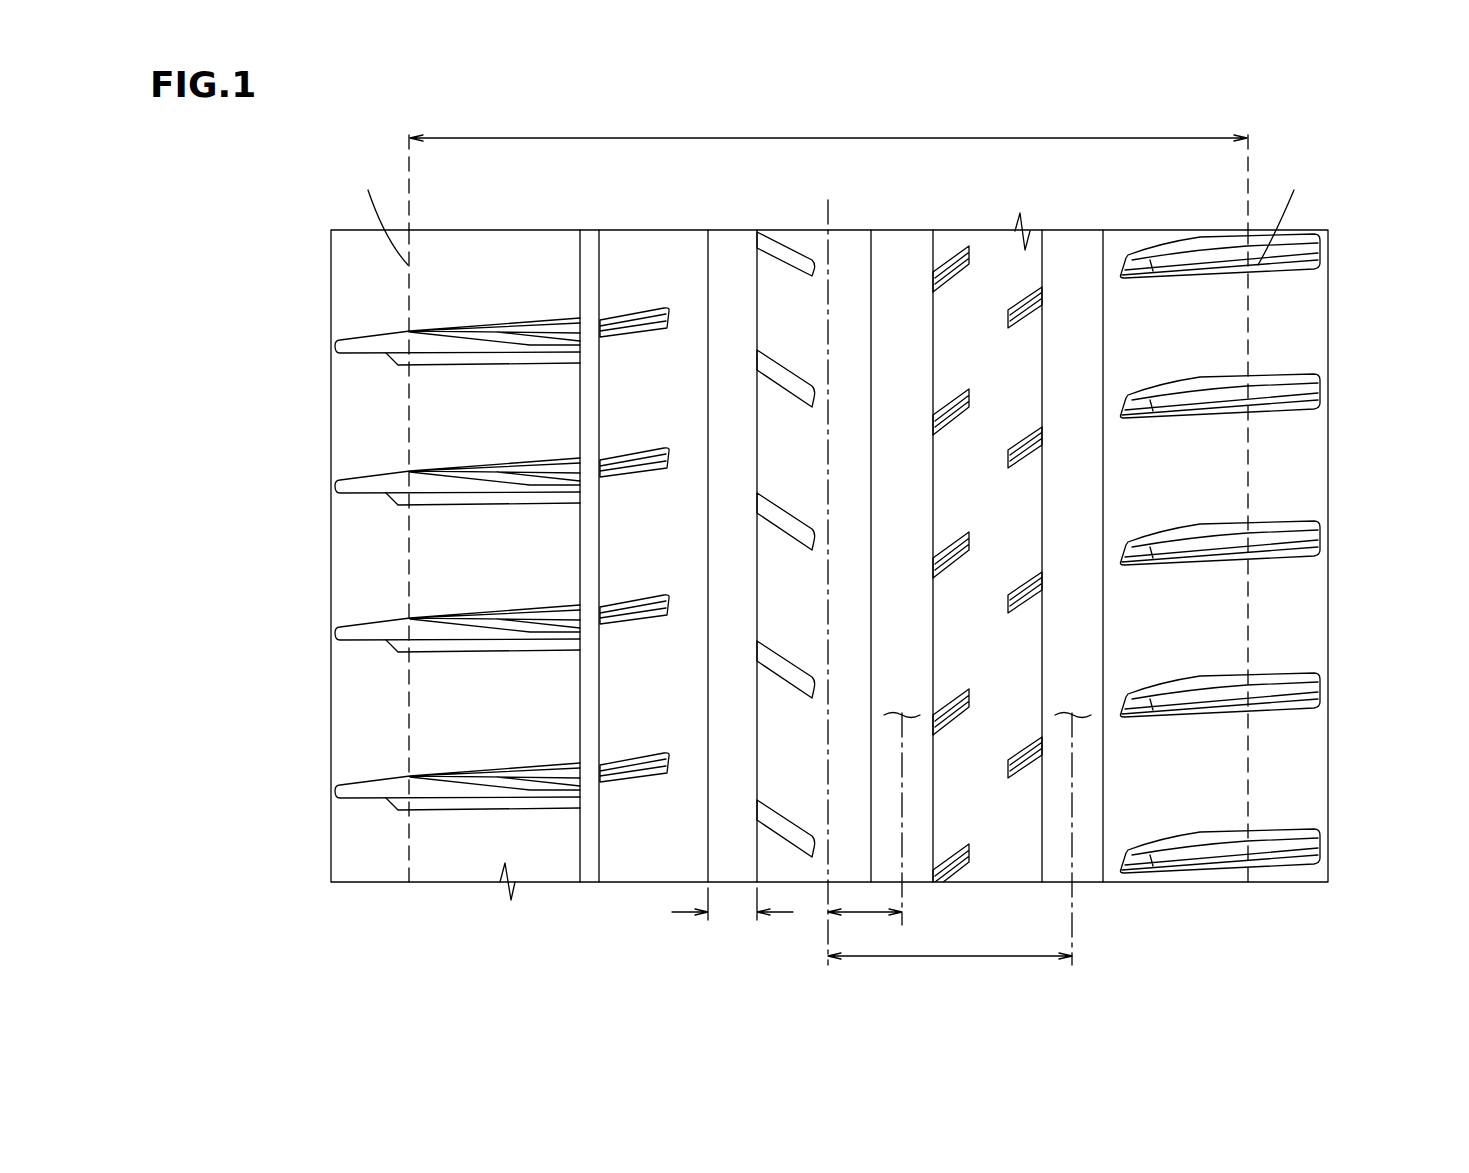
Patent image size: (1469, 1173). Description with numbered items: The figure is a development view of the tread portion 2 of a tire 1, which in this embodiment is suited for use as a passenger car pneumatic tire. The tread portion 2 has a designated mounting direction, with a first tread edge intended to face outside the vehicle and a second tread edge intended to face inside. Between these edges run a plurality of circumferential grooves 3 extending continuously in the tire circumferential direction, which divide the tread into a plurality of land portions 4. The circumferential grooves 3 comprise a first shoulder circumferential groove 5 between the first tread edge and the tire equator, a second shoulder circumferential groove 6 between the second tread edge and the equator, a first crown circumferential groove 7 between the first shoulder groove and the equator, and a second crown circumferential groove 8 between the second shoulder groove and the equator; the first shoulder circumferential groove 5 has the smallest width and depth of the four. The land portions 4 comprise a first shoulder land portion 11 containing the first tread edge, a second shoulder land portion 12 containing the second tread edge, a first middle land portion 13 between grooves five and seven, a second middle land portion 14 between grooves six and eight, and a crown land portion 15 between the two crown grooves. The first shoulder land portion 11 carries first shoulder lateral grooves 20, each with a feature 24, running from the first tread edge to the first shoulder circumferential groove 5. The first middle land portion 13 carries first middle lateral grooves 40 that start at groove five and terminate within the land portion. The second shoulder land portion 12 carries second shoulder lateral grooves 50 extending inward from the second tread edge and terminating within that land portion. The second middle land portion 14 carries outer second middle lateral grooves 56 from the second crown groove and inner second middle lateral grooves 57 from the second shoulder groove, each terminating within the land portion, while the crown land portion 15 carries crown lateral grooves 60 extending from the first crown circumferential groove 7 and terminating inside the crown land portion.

The tire 1 is at (1120, 210).
The tread portion 2 is at (773, 207).
The circumferential grooves 3 is at (1084, 473).
The land portions 4 is at (441, 250).
The first shoulder circumferential groove 5 is at (590, 250).
The second shoulder circumferential groove 6 is at (1067, 256).
The first crown circumferential groove 7 is at (726, 249).
The second crown circumferential groove 8 is at (905, 249).
The first shoulder land portion 11 is at (508, 249).
The second shoulder land portion 12 is at (1166, 292).
The first middle land portion 13 is at (646, 253).
The second middle land portion 14 is at (988, 263).
The crown land portion 15 is at (848, 250).
The first shoulder lateral grooves 20 is at (434, 342).
The chamfer portion of shoulder lateral groove 24 is at (548, 474).
The first middle lateral grooves 40 is at (617, 599).
The second shoulder lateral grooves 50 is at (1216, 393).
The outer second middle lateral grooves 56 is at (963, 555).
The inner second middle lateral grooves 57 is at (1040, 605).
The crown lateral grooves 60 is at (769, 384).